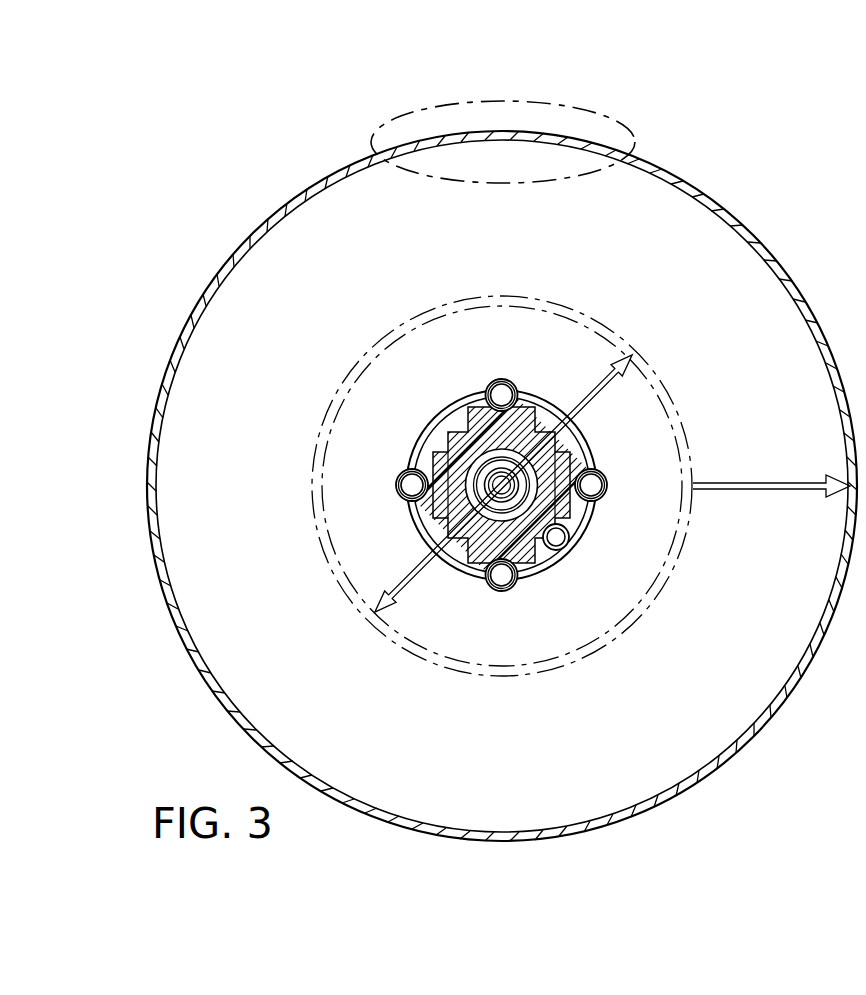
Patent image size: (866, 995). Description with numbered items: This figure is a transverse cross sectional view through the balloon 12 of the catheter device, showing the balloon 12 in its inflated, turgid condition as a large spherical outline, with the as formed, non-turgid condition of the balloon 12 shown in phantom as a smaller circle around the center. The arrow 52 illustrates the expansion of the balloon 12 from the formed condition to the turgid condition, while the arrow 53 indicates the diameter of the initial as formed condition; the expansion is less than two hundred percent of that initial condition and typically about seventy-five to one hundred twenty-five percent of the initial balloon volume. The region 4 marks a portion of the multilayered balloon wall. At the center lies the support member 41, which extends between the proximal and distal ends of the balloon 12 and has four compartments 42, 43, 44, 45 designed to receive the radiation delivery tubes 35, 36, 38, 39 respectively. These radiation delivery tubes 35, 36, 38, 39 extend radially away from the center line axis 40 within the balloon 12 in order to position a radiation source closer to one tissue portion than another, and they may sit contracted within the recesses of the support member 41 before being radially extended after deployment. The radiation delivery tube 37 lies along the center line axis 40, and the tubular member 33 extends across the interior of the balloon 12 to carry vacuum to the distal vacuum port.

The section line / detail region 4 is at (503, 130).
The balloon 12 is at (688, 182).
The tubular member 33 is at (569, 542).
The radiation delivery tube 35 is at (500, 379).
The radiation delivery tube 36 is at (607, 484).
The radiation delivery tube 37 is at (473, 443).
The radiation delivery tube 38 is at (502, 590).
The radiation delivery tube 39 is at (397, 481).
The center line axis 40 is at (465, 460).
The support member 41 is at (578, 510).
The compartment 42 is at (523, 407).
The compartment 43 is at (573, 462).
The compartment 44 is at (523, 560).
The compartment 45 is at (418, 510).
The arrow 52 is at (743, 483).
The arrow 53 is at (410, 587).